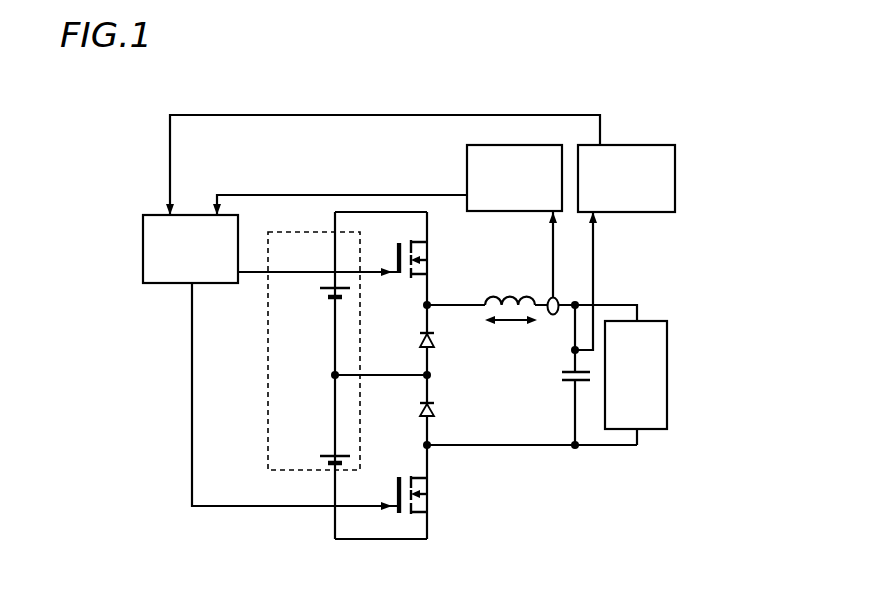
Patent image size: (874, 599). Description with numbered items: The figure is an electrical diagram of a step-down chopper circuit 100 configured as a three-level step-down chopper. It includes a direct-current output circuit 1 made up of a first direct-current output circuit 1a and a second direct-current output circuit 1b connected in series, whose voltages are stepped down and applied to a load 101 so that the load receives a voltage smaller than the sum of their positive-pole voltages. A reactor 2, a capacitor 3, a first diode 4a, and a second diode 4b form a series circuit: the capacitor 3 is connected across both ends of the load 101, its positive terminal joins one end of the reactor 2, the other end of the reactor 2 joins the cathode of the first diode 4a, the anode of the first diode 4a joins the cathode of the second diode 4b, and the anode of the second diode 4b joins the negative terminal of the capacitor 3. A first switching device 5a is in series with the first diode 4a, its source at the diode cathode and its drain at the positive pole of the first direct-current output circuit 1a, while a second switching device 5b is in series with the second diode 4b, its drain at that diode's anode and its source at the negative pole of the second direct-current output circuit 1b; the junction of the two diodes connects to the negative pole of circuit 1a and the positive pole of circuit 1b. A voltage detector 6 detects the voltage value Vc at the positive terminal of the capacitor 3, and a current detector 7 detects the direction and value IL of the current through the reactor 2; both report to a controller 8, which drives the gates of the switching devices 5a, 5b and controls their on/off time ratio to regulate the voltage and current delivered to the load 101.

The step-down chopper circuit 100 is at (131, 120).
The controller 8 is at (143, 233).
The current detector 7 is at (523, 145).
The voltage detector 6 is at (623, 145).
The direct-current output circuit 1 is at (268, 341).
The first direct-current output circuit 1a is at (330, 297).
The second direct-current output circuit 1b is at (325, 455).
The first switching device 5a is at (399, 250).
The second switching device 5b is at (400, 477).
The first diode 4a is at (434, 341).
The second diode 4b is at (434, 407).
The reactor 2 is at (500, 297).
The capacitor 3 is at (565, 382).
The load 101 is at (667, 372).